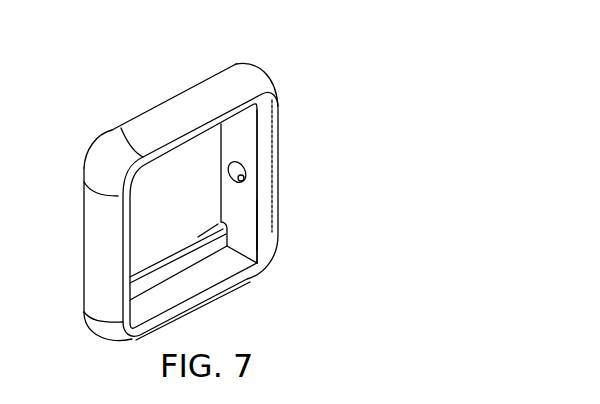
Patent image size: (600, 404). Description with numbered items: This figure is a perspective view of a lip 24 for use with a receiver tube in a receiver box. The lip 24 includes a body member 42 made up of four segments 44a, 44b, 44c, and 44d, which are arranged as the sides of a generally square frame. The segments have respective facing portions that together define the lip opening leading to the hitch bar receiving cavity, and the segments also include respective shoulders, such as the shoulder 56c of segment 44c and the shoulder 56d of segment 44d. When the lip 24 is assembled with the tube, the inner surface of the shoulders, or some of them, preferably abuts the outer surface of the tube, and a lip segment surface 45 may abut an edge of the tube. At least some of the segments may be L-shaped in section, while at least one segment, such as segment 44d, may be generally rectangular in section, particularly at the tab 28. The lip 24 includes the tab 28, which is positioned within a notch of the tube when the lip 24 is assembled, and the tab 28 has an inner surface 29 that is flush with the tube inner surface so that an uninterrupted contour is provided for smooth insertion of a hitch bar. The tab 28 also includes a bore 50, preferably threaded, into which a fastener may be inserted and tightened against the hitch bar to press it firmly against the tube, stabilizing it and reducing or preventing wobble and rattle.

The lip 24 is at (334, 0).
The body member 42 is at (83, 169).
The segment 44a is at (172, 124).
The segment 44b is at (104, 277).
The segment 44c is at (233, 291).
The segment 44d is at (264, 172).
The lip segment surface 45 is at (267, 204).
The inner surface 29 is at (252, 225).
The shoulder 56d is at (250, 243).
The shoulder 56c is at (167, 300).
The tab 28 is at (234, 203).
The bore 50 is at (235, 174).